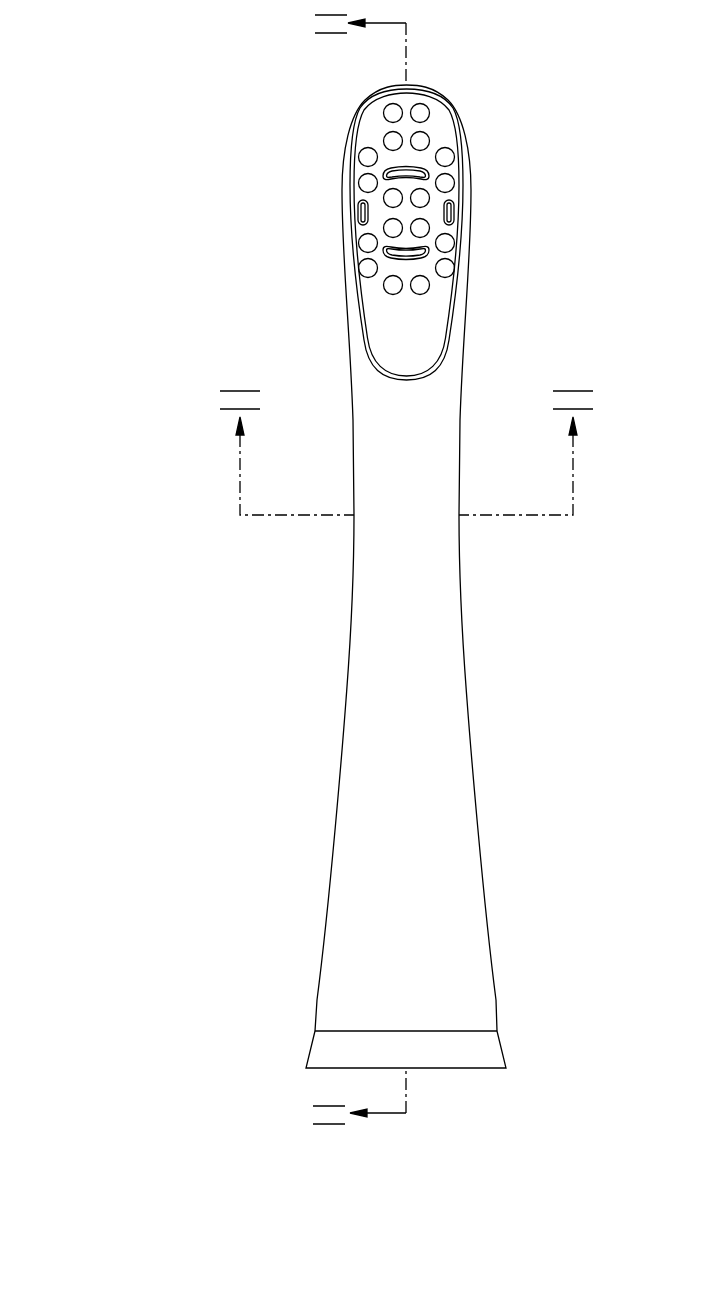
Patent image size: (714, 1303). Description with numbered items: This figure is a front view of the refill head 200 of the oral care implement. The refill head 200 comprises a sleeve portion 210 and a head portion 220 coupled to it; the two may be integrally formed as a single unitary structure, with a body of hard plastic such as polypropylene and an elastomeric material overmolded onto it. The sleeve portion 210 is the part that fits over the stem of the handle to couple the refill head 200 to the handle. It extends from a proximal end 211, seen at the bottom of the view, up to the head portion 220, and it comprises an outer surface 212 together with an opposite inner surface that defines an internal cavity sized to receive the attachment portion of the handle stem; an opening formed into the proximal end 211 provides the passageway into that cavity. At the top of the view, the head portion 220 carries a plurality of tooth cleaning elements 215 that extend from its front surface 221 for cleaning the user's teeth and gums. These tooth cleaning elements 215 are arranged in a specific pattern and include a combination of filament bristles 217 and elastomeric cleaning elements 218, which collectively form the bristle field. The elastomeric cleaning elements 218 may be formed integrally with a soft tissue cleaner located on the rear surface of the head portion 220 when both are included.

The refill head 200 is at (128, 645).
The sleeve portion 210 is at (400, 790).
The proximal end 211 is at (469, 1068).
The outer surface 212 is at (452, 856).
The tooth cleaning elements 215 is at (352, 199).
The filament bristles 217 is at (367, 150).
The elastomeric cleaning elements 218 is at (412, 257).
The head portion 220 is at (433, 123).
The front surface 221 is at (435, 203).